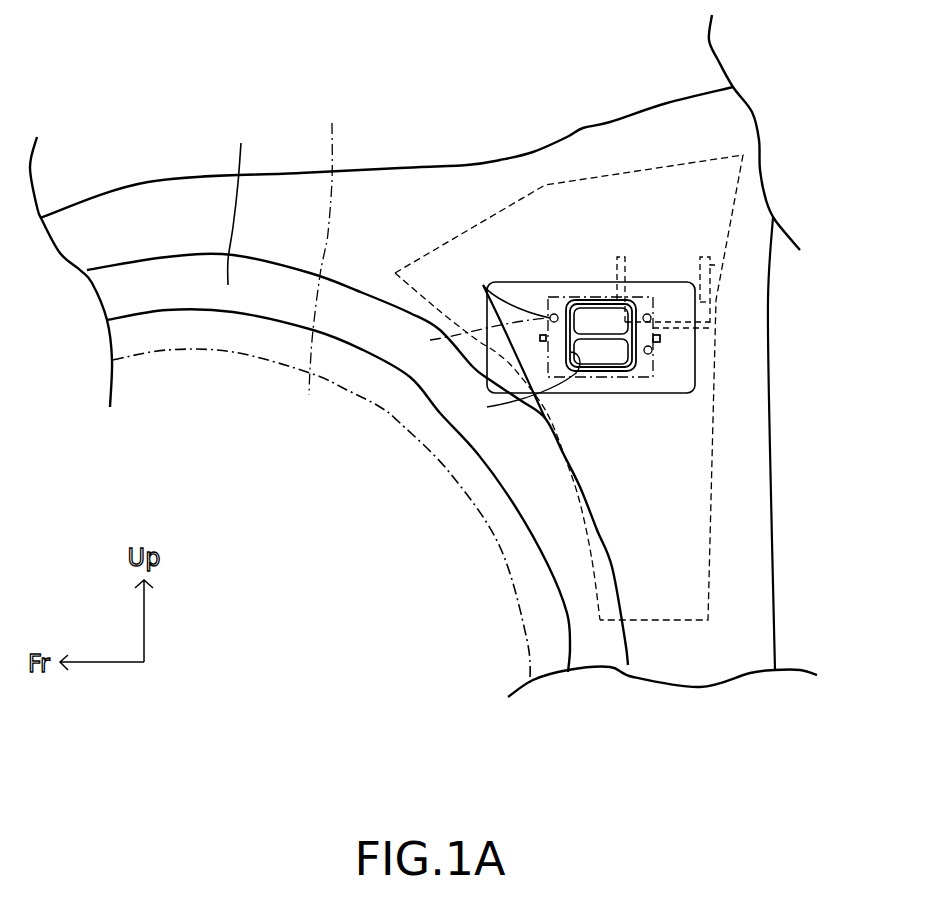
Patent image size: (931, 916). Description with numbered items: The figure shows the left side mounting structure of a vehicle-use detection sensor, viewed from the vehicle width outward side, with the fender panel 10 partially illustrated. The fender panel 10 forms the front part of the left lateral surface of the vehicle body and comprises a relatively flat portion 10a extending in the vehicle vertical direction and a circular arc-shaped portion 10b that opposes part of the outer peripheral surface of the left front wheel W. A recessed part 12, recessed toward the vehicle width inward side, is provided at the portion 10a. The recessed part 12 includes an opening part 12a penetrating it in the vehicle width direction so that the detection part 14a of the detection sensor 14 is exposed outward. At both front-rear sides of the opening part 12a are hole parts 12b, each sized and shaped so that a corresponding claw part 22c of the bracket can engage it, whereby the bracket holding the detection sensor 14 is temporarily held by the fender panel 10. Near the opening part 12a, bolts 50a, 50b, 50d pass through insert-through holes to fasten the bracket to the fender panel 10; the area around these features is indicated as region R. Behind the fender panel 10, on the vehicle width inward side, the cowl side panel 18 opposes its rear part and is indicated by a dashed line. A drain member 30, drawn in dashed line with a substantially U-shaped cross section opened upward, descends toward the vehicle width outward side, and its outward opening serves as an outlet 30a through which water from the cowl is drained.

The fender panel 10 is at (132, 171).
The relatively flat portion 10a is at (757, 337).
The circular arc-shaped portion 10b is at (242, 202).
The recessed part 12 is at (521, 283).
The opening part 12a is at (524, 392).
The hole parts 12b is at (540, 340).
The detection sensor 14 is at (591, 301).
The detection part 14a is at (586, 313).
The cowl side panel 18 is at (640, 170).
The claw parts 22c is at (542, 342).
The drain member 30 is at (715, 265).
The outlet 30a is at (710, 302).
The bolt 50a is at (483, 284).
The bolt 50b is at (652, 317).
The bolt 50d is at (653, 352).
The region R is at (478, 335).
The left front wheel W is at (325, 248).